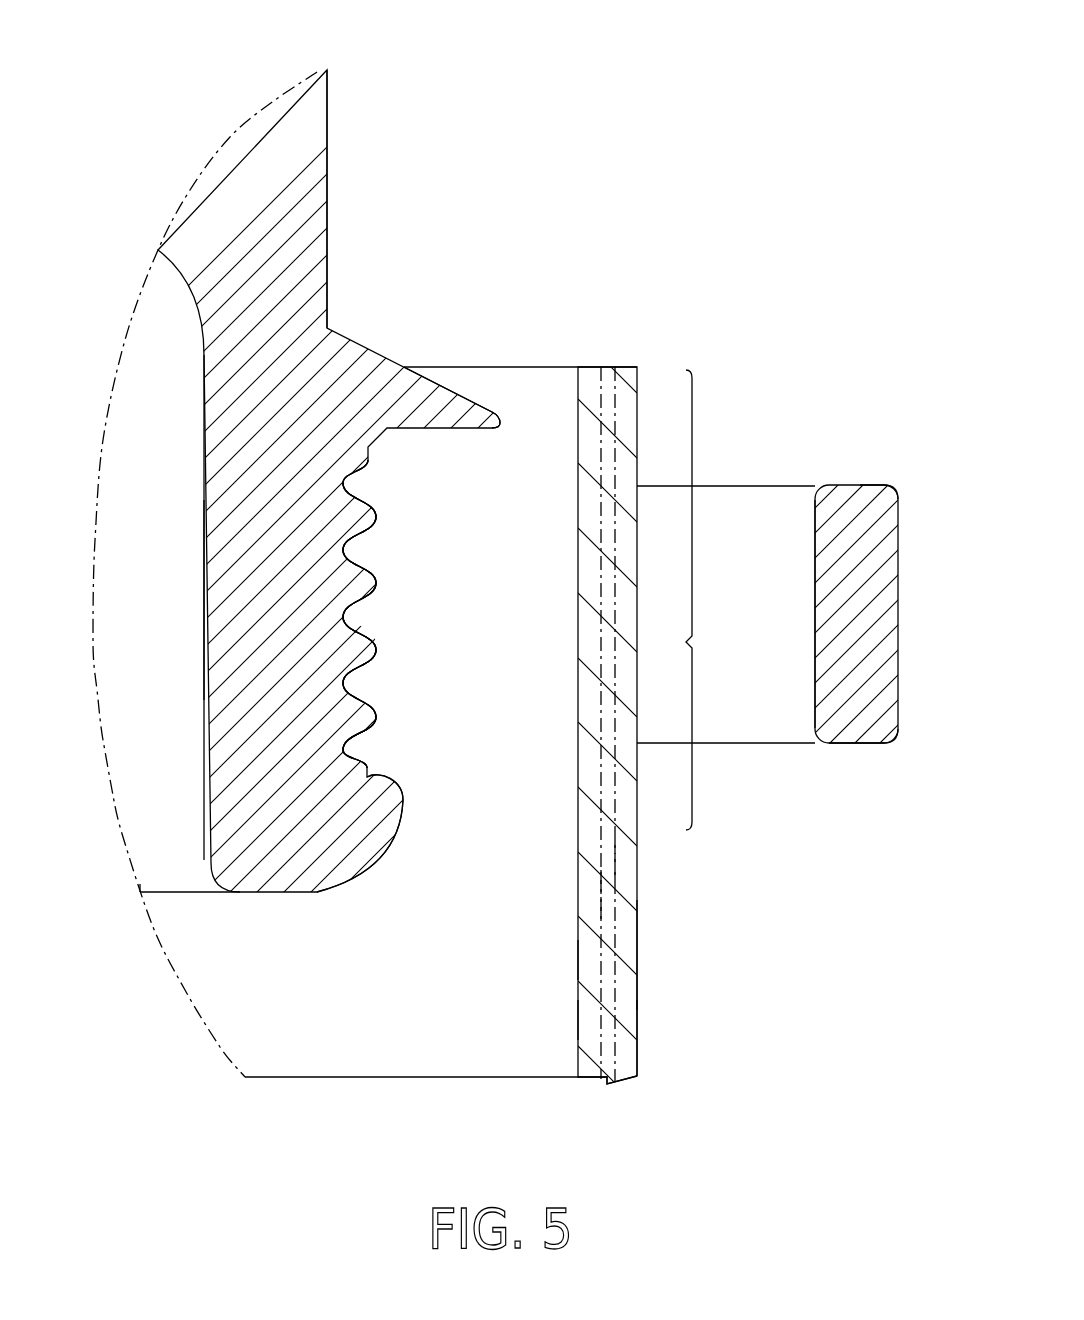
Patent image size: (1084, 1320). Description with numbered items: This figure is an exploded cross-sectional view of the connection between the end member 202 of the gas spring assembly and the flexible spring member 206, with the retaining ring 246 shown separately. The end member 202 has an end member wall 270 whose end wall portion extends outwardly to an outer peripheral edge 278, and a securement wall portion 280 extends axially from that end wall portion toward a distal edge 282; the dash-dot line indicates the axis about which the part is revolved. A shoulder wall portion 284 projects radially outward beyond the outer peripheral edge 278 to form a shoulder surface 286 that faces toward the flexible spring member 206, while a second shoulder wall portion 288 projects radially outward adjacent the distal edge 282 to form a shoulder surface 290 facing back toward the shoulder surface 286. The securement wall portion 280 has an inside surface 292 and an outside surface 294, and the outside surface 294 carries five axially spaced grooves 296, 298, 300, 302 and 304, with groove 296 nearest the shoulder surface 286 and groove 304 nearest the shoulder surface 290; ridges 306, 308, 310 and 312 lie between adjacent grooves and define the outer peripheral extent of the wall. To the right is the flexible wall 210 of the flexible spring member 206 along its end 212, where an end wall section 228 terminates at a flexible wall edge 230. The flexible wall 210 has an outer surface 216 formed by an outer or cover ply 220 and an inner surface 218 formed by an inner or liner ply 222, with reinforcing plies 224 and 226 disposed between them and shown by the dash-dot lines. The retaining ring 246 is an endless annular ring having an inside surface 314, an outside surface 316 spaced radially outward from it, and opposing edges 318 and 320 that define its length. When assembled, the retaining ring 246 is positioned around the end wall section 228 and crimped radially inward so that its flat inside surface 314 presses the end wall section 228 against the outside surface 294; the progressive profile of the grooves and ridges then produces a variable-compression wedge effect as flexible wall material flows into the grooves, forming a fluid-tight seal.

The end member 202 is at (373, 83).
The flexible spring member 206 is at (720, 1027).
The flexible wall 210 is at (625, 1060).
The end 212 is at (735, 363).
The outer surface 216 is at (637, 983).
The inner surface 218 is at (578, 1020).
The outer or cover ply 220 is at (628, 932).
The inner or liner ply 222 is at (590, 960).
The reinforcing ply 224 is at (617, 862).
The reinforcing ply 226 is at (602, 892).
The end wall section 228 is at (719, 600).
The flexible wall edge 230 is at (625, 367).
The retaining ring 246 is at (888, 748).
The end member wall 270 is at (247, 175).
The outer peripheral edge 278 is at (327, 200).
The securement wall portion 280 is at (270, 588).
The distal edge 282 is at (185, 893).
The shoulder wall portion 284 is at (420, 397).
The shoulder surface 286 is at (467, 427).
The shoulder wall portion 288 is at (390, 800).
The shoulder surface 290 is at (378, 800).
The inside surface 292 is at (200, 393).
The outside surface 294 is at (400, 500).
The groove 296 is at (340, 475).
The groove 298 is at (340, 558).
The groove 300 is at (340, 618).
The groove 302 is at (340, 690).
The groove 304 is at (350, 752).
The ridge 306 is at (368, 514).
The ridge 308 is at (367, 587).
The ridge 310 is at (367, 653).
The ridge 312 is at (363, 720).
The inside surface 314 is at (815, 535).
The outside surface 316 is at (898, 600).
The edge 318 is at (868, 485).
The edge 320 is at (850, 745).